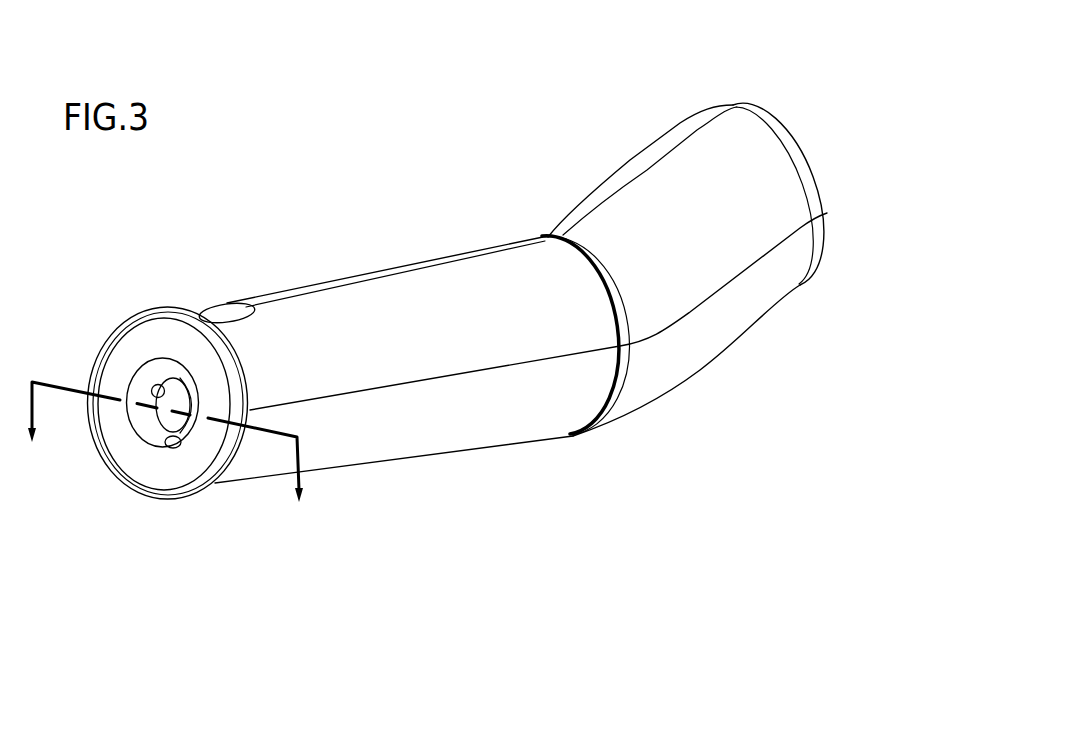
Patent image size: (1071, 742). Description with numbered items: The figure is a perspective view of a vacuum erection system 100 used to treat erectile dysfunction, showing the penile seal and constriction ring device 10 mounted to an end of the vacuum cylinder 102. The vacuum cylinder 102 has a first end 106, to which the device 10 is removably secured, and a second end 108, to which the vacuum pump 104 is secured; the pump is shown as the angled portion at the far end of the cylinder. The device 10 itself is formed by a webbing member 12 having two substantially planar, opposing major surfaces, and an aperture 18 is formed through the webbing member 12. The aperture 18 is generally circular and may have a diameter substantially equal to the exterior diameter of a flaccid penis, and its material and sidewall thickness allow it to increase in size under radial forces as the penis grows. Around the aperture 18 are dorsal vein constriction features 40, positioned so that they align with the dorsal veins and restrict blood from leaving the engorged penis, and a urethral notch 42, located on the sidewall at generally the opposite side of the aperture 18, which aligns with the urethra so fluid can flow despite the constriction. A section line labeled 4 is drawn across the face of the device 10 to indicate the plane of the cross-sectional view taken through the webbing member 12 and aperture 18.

The section line 4- 4 is at (164, 460).
The penile seal and constriction ring device 10 is at (90, 343).
The webbing member 12 is at (117, 455).
The aperture 18 is at (193, 403).
The dorsal vein constriction features 40 is at (157, 390).
The urethral notch 42 is at (173, 447).
The vacuum erection system 100 is at (329, 160).
The vacuum cylinder 102 is at (382, 287).
The vacuum pump 104 is at (665, 177).
The first end 106 is at (203, 320).
The second end 108 is at (543, 237).